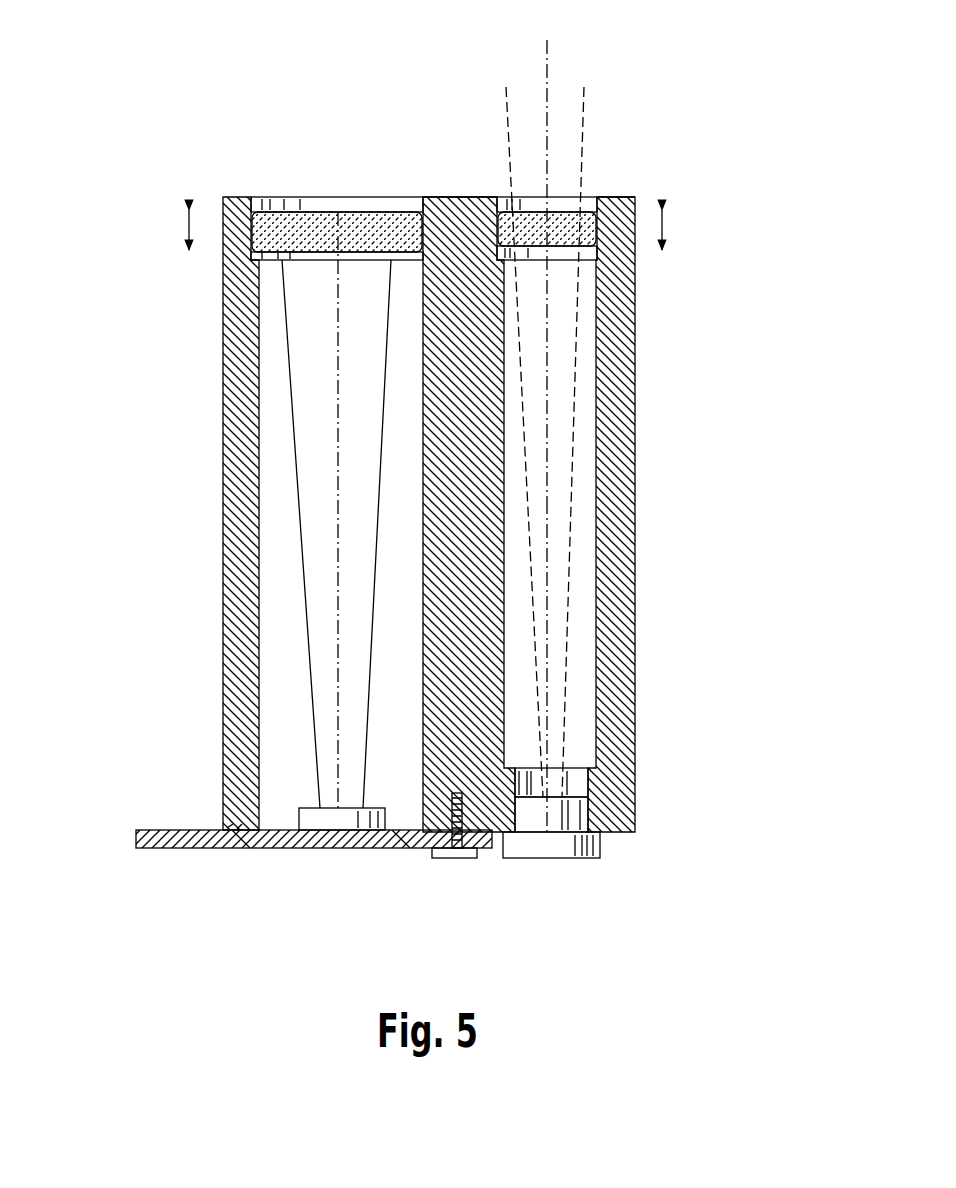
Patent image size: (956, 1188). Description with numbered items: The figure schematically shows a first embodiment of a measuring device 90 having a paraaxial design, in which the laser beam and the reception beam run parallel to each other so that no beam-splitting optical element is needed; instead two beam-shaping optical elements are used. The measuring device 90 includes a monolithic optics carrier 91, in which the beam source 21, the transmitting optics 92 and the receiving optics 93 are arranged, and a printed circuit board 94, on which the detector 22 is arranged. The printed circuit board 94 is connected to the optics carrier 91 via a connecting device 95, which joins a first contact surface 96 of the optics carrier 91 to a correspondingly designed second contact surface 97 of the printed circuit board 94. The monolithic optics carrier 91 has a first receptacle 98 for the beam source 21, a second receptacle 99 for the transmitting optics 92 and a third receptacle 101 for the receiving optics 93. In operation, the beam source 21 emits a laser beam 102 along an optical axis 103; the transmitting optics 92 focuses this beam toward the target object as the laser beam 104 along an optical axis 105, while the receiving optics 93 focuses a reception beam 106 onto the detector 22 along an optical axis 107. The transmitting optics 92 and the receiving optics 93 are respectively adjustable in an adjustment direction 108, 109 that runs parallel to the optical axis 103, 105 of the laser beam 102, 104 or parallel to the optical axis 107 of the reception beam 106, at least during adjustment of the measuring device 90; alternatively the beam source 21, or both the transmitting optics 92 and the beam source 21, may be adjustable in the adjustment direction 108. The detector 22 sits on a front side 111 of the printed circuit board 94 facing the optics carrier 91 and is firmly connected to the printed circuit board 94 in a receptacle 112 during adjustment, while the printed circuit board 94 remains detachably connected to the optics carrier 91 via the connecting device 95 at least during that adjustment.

The measuring device 90 is at (206, 128).
The monolithic optics carrier 91 is at (615, 420).
The transmitting optics 92 is at (535, 230).
The receiving optics 93 is at (350, 232).
The printed circuit board 94 is at (165, 848).
The connecting device 95 is at (457, 858).
The first contact surface 96 is at (240, 848).
The second contact surface 97 is at (238, 828).
The first receptacle 98 is at (577, 790).
The second receptacle 99 is at (591, 195).
The third receptacle 101 is at (421, 195).
The laser beam 102 is at (571, 553).
The optical axis 103 is at (551, 647).
The laser beam 104 is at (585, 95).
The optical axis 105 is at (550, 50).
The reception beam 106 is at (308, 644).
The optical axis 107 is at (337, 500).
The adjustment direction 108 is at (665, 231).
The adjustment direction 109 is at (187, 231).
The front side 111 is at (280, 830).
The receptacle 112 is at (397, 848).
The beam source 21 is at (522, 858).
The detector 22 is at (338, 822).